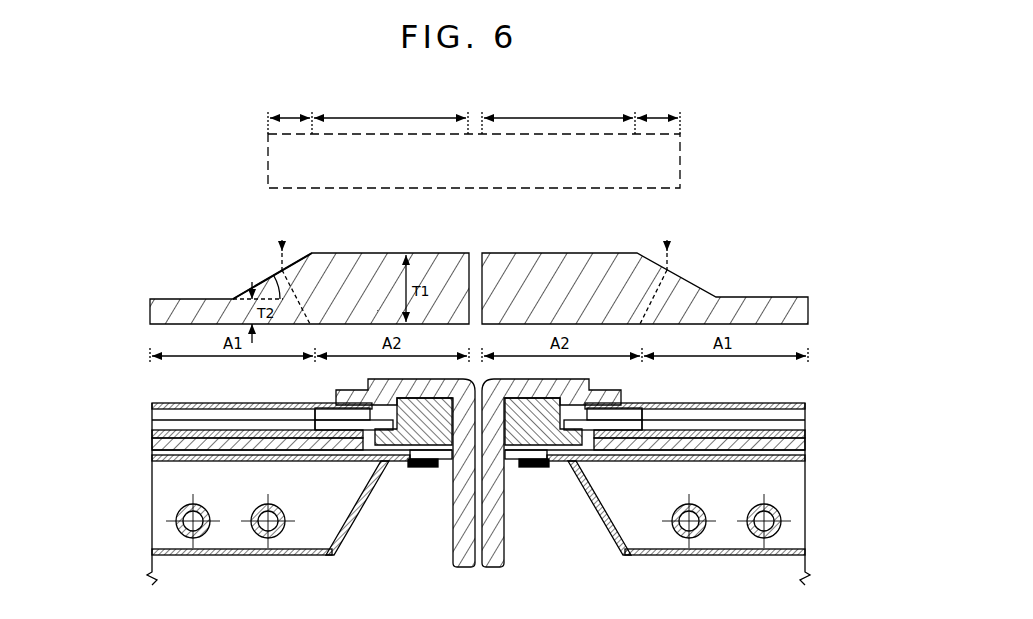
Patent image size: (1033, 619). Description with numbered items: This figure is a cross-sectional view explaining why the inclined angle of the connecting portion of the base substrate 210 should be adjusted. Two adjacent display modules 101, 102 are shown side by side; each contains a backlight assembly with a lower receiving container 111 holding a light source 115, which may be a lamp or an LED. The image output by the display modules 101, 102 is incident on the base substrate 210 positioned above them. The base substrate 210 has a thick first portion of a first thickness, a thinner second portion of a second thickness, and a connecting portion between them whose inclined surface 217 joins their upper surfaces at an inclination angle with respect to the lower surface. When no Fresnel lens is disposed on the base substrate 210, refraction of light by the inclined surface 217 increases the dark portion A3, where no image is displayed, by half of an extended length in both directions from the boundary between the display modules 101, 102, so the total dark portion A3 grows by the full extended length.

The base substrate 210 is at (163, 311).
The inclined surface 217 is at (282, 272).
The display module 101 is at (269, 494).
The display module 102 is at (815, 478).
The light source 115 is at (193, 530).
The lower receiving container 111 is at (288, 557).
The dark portion A3 is at (272, 165).